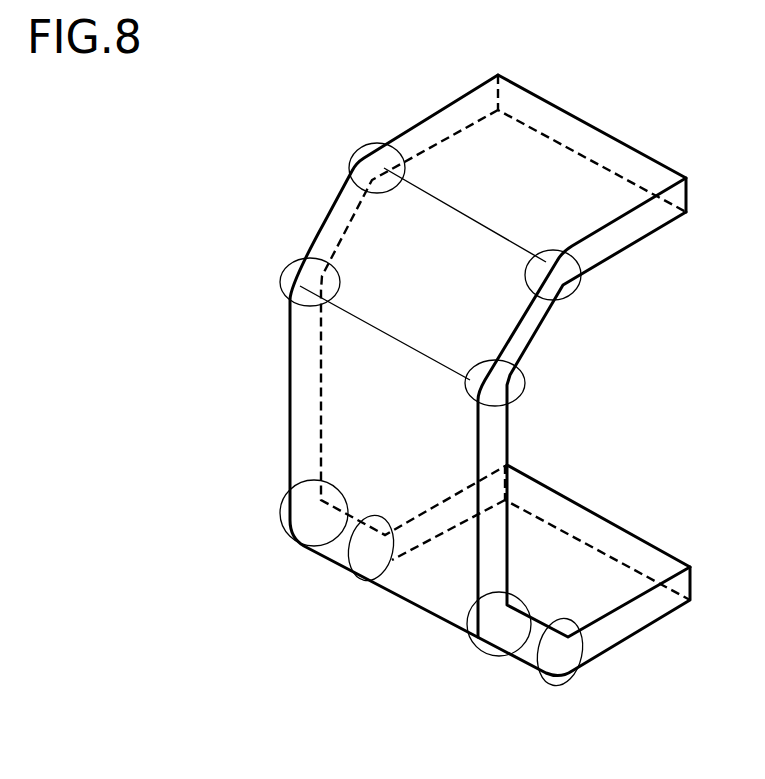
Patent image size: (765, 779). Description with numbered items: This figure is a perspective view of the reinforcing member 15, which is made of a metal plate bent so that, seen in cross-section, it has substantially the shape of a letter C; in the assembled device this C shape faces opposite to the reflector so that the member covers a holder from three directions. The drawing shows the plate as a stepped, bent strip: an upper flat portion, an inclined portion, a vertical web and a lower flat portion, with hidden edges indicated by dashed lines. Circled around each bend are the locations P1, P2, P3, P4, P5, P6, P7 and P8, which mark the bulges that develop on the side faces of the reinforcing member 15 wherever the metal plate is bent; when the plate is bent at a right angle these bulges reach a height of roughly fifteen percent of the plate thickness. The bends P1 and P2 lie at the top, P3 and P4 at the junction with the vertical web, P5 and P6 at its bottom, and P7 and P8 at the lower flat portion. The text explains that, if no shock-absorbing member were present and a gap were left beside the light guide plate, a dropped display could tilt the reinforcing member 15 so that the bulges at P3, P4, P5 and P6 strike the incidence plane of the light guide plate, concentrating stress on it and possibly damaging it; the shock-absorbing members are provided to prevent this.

The reinforcing member 15 is at (572, 87).
The bulge at bent portion P1 is at (348, 162).
The bulge at bent portion P2 is at (577, 300).
The bulge at bent portion P3 is at (283, 280).
The bulge at bent portion P4 is at (518, 400).
The bulge at bent portion P5 is at (293, 545).
The bulge at bent portion P6 is at (476, 650).
The bulge at bent portion P7 is at (356, 584).
The bulge at bent portion P8 is at (577, 688).